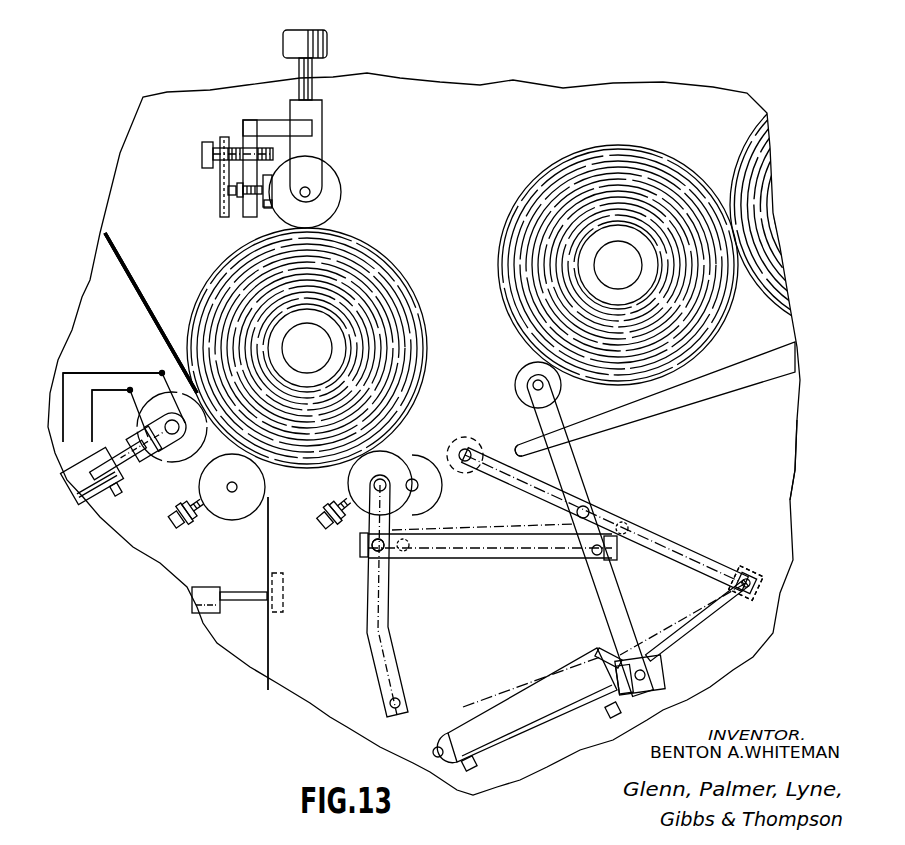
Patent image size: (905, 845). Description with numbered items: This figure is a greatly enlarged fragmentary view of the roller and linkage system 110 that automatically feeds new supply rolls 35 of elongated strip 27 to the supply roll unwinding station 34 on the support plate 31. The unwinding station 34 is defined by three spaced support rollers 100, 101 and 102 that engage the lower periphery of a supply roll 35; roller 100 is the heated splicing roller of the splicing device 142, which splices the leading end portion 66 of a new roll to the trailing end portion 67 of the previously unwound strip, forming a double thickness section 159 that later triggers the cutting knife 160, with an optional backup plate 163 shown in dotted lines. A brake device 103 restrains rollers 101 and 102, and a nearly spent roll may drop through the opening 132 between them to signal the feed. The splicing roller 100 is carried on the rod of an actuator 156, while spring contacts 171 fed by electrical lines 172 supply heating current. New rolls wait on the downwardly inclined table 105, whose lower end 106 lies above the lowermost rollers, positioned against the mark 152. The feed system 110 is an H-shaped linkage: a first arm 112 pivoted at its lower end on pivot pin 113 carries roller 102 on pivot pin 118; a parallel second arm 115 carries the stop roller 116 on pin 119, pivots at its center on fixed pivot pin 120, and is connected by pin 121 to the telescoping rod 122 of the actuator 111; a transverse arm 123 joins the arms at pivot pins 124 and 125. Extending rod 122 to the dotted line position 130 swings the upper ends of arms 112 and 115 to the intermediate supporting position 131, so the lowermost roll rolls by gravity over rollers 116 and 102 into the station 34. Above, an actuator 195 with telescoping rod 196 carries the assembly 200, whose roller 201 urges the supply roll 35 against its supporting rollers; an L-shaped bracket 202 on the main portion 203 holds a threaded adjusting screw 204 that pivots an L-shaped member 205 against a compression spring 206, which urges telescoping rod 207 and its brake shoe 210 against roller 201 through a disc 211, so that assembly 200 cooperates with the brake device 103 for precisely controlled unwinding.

The elongated strip 27 is at (142, 300).
The support plate 31 is at (768, 474).
The supply roll unwinding station 34 is at (300, 514).
The supply roll 35 is at (385, 272).
The leading end portion 66 is at (124, 258).
The trailing end portion 67 is at (165, 345).
The support roller 100 is at (186, 458).
The support roller 101 is at (233, 512).
The support roller 102 is at (385, 462).
The brake device 103 is at (163, 530).
The inclined table 105 is at (727, 382).
The lower end 106 is at (520, 443).
The roller and linkage system 110 is at (588, 709).
The actuator 111 is at (559, 718).
The first arm 112 is at (392, 662).
The pivot pin 113 is at (380, 702).
The second arm 115 is at (619, 592).
The stop roller 116 is at (527, 370).
The pivot pin 118 is at (365, 481).
The pin 119 is at (532, 383).
The fixed pivot pin 120 is at (589, 510).
The pin 121 is at (773, 576).
The telescoping rod 122 is at (690, 622).
The transverse arm 123 is at (508, 565).
The pivot pin 124 is at (390, 548).
The pivot pin 125 is at (594, 556).
The dotted line position 130 is at (760, 562).
The intermediate supporting position 131 is at (467, 437).
The opening 132 is at (278, 520).
The splicing device 142 is at (82, 360).
The mark 152 is at (657, 150).
The actuator 156 is at (77, 492).
The double thickness section 159 is at (126, 284).
The cutting knife 160 is at (214, 615).
The backup plate 163 is at (282, 612).
The spring contacts 171 is at (150, 418).
The electrical lines 172 is at (63, 417).
The actuator 195 is at (329, 46).
The telescoping rod 196 is at (313, 88).
The assembly 200 is at (283, 143).
The roller 201 is at (333, 198).
The L-shaped bracket 202 is at (273, 120).
The main portion 203 is at (313, 115).
The threaded adjusting screw 204 is at (235, 147).
The L-shaped member 205 is at (206, 140).
The compression spring 206 is at (232, 185).
The telescoping rod 207 is at (265, 209).
The brake shoe 210 is at (273, 208).
The disc 211 is at (226, 206).